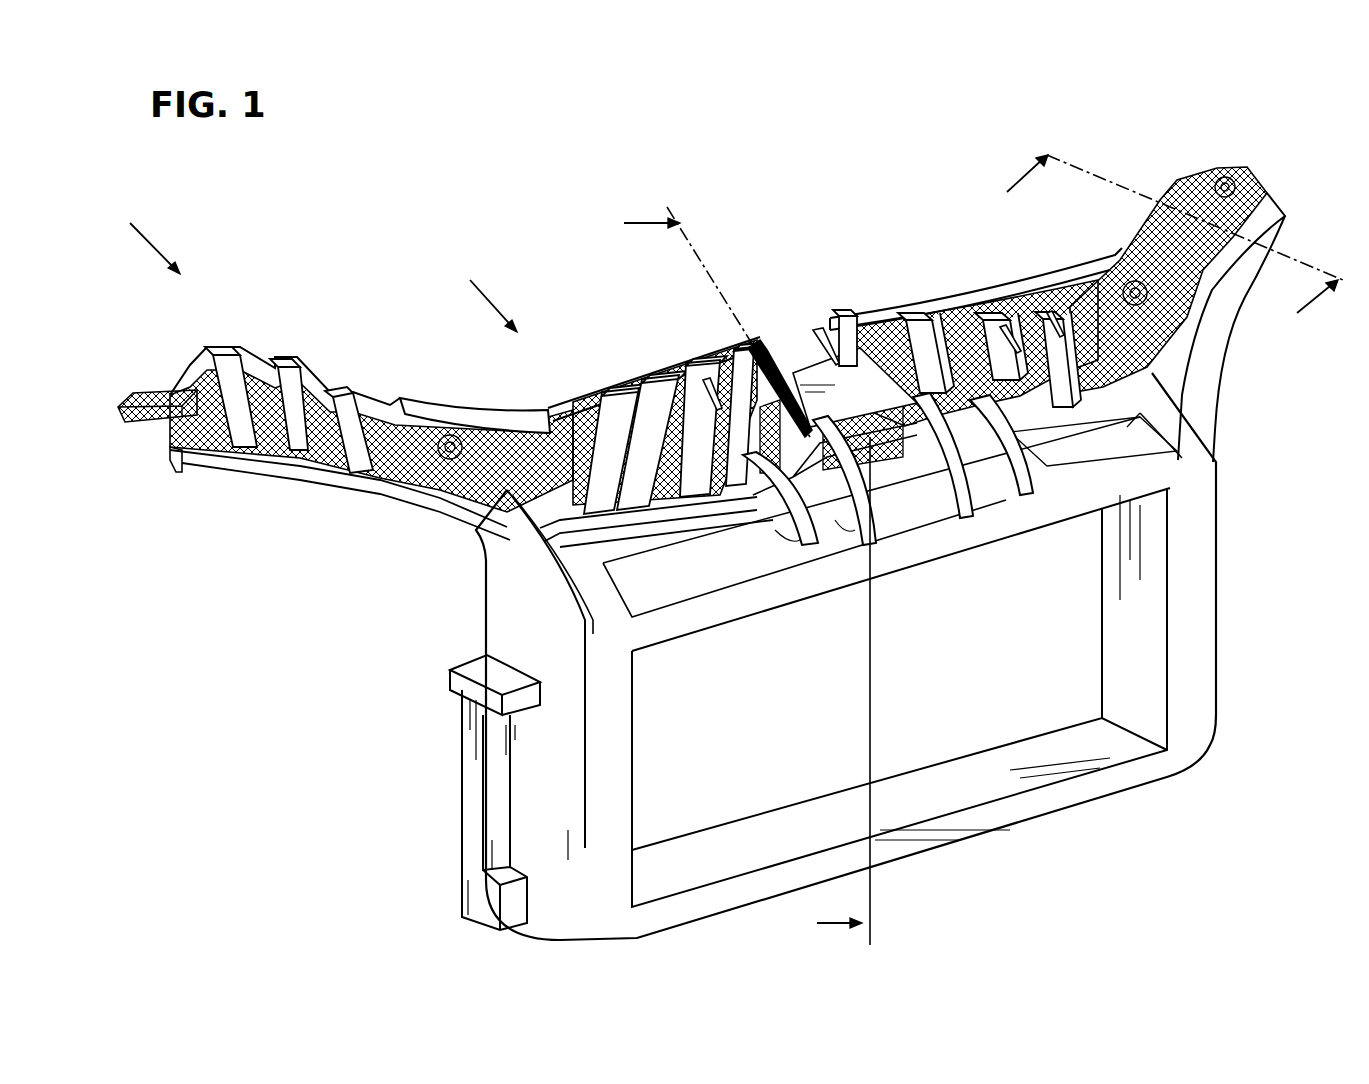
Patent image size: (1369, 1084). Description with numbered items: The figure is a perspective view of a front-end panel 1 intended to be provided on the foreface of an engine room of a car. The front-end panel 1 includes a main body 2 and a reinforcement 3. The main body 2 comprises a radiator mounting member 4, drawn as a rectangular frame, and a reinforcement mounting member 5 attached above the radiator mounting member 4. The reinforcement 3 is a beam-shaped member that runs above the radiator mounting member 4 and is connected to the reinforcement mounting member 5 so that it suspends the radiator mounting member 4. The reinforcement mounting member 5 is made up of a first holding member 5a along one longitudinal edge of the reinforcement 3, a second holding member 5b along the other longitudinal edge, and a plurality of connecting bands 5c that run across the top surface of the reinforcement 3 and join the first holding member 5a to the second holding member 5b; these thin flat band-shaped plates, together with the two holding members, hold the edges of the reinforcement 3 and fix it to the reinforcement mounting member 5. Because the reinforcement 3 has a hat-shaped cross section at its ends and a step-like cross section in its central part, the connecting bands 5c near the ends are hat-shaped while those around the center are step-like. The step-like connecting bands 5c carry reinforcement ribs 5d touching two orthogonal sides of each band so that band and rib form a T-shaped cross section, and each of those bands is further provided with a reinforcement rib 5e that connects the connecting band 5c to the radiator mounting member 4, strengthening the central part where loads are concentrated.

The front-end panel 1 is at (505, 172).
The main body 2 is at (1208, 612).
The reinforcement 3 is at (148, 393).
The radiator mounting member 4 is at (1155, 547).
The reinforcement mounting member 5 is at (840, 378).
The first holding member 5a is at (178, 473).
The second holding member 5b is at (130, 424).
The connecting bands 5c is at (232, 383).
The reinforcement rib 5d is at (658, 372).
The reinforcement rib 5e is at (793, 530).